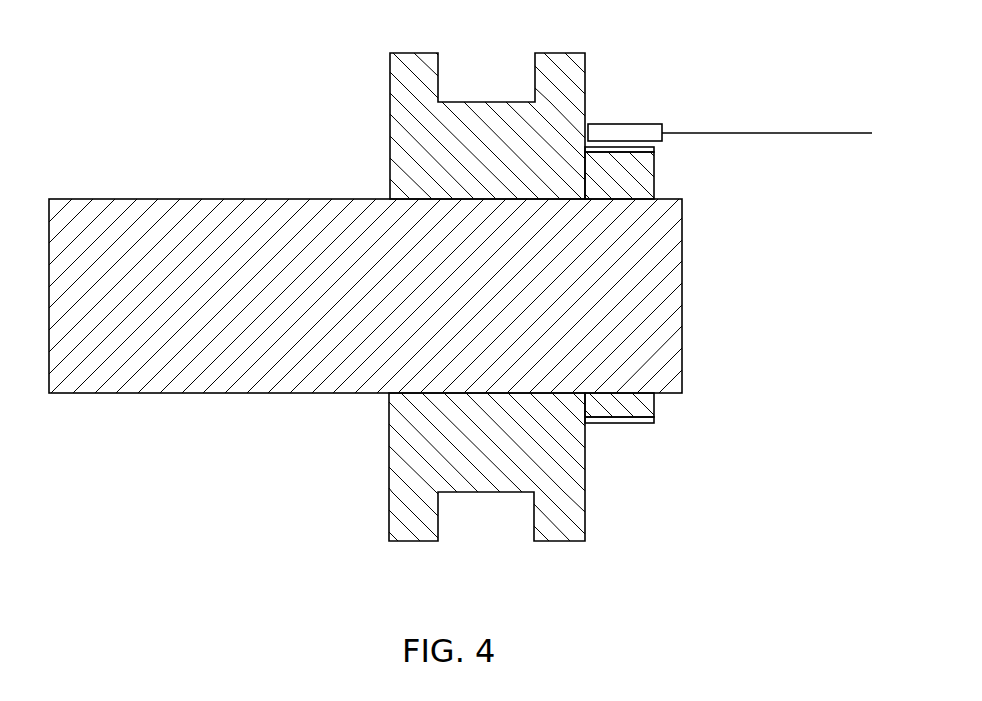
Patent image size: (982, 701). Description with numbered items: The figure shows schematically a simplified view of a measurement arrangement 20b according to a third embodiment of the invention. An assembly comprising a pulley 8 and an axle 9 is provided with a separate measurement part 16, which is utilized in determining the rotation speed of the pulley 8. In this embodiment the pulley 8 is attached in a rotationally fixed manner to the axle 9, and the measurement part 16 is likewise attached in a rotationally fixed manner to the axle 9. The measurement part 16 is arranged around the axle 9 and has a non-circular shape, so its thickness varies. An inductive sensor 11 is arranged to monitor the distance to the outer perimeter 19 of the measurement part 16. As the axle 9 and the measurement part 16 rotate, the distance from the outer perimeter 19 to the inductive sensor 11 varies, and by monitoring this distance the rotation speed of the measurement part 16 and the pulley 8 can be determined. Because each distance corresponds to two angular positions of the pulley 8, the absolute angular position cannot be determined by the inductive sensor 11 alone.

The pulley 8 is at (407, 122).
The axle 9 is at (658, 273).
The inductive sensor 11 is at (640, 124).
The measurement part 16 is at (645, 175).
The outer perimeter 19 is at (630, 425).
The measurement arrangement 20b is at (750, 355).